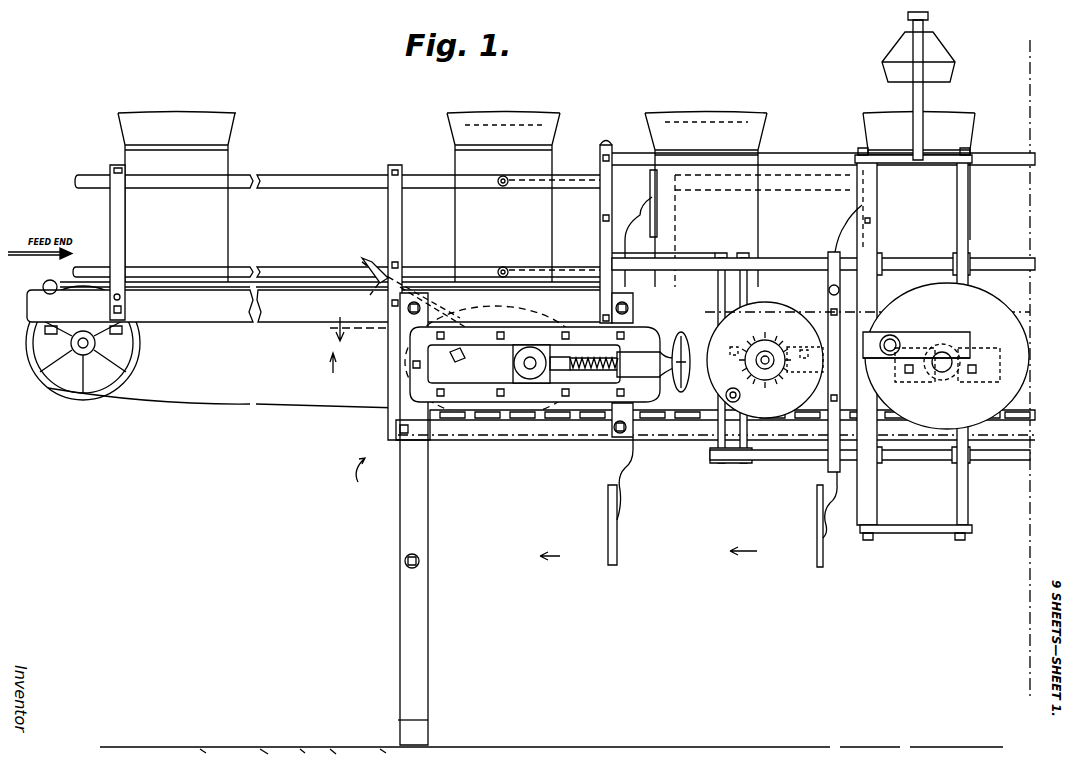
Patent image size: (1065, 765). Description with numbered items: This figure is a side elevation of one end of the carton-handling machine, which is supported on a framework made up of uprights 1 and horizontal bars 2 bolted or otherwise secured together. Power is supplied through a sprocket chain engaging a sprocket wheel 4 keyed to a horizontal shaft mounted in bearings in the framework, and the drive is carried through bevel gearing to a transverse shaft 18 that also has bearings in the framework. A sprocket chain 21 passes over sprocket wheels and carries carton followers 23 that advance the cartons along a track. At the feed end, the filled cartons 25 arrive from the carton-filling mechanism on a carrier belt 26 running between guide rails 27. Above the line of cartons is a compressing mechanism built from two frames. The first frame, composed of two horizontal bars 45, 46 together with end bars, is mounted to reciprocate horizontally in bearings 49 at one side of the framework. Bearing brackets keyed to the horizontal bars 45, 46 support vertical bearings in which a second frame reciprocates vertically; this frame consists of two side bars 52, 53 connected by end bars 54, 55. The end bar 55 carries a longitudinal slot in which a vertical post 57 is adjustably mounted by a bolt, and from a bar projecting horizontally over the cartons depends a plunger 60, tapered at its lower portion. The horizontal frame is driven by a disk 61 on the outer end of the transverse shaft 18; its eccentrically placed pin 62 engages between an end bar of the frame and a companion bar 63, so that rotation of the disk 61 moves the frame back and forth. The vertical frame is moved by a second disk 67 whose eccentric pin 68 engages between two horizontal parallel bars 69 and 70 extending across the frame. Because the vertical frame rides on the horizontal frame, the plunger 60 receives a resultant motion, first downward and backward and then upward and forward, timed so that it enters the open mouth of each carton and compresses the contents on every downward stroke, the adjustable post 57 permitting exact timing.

The uprights 1 is at (400, 536).
The horizontal bars 2 is at (504, 438).
The sprocket wheel 4 is at (332, 334).
The transverse shaft 18 is at (770, 352).
The sprocket chain 21 is at (580, 425).
The carton followers 23 is at (608, 508).
The filled cartons 25 is at (226, 236).
The carrier belt 26 is at (182, 404).
The guide rails 27 is at (320, 178).
The horizontal bar 45 is at (912, 266).
The horizontal bar 46 is at (718, 440).
The bearings 49 is at (826, 262).
The side bar 52 is at (968, 220).
The side bar 53 is at (882, 215).
The end bar 54 is at (928, 533).
The end bar 55 is at (950, 165).
The vertical post 57 is at (923, 112).
The plunger 60 is at (888, 70).
The disk 61 is at (766, 381).
The pin 62 is at (726, 397).
The companion bar 63 is at (768, 338).
The disk 67 is at (975, 425).
The pin 68 is at (890, 358).
The horizontal parallel bar 69 is at (922, 332).
The horizontal parallel bar 70 is at (932, 378).